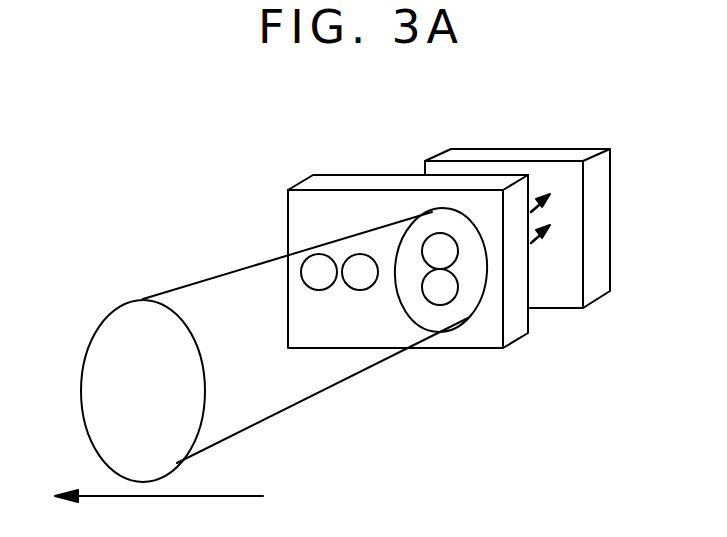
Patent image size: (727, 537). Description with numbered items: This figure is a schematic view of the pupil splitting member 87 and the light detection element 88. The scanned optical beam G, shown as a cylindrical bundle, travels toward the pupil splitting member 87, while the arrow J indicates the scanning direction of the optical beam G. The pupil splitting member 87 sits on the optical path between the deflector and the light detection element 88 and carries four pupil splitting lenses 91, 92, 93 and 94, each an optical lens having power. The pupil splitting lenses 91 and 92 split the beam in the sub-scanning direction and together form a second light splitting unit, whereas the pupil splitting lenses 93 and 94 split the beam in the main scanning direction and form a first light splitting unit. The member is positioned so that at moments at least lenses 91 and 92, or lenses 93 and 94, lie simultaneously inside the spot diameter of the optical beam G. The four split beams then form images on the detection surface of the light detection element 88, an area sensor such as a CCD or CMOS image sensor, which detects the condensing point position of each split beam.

The pupil splitting member 87 is at (380, 175).
The light detection element 88 is at (557, 149).
The pupil splitting lens 91 is at (458, 263).
The pupil splitting lens 92 is at (447, 305).
The pupil splitting lens 93 is at (353, 256).
The pupil splitting lens 94 is at (283, 254).
The optical beam G is at (160, 298).
The arrow indicating scanning direction J is at (159, 510).